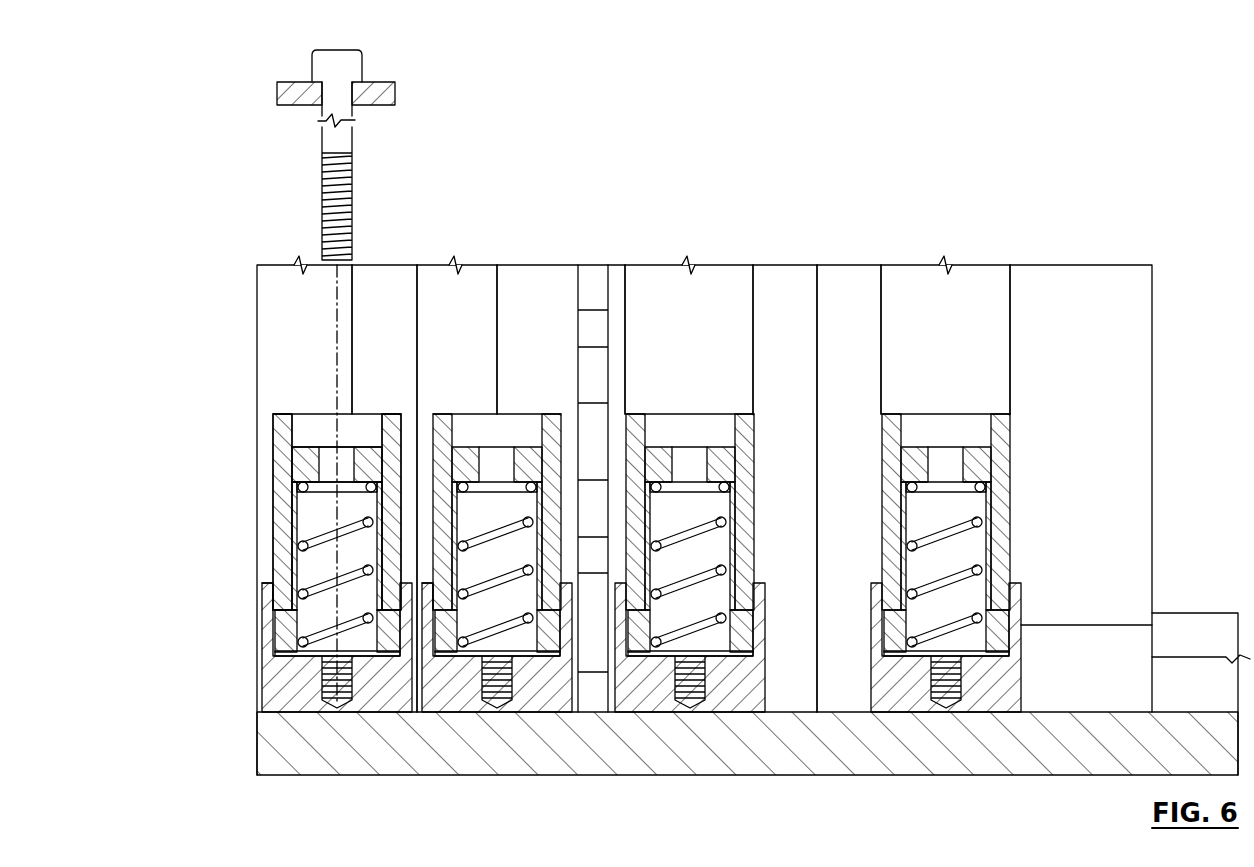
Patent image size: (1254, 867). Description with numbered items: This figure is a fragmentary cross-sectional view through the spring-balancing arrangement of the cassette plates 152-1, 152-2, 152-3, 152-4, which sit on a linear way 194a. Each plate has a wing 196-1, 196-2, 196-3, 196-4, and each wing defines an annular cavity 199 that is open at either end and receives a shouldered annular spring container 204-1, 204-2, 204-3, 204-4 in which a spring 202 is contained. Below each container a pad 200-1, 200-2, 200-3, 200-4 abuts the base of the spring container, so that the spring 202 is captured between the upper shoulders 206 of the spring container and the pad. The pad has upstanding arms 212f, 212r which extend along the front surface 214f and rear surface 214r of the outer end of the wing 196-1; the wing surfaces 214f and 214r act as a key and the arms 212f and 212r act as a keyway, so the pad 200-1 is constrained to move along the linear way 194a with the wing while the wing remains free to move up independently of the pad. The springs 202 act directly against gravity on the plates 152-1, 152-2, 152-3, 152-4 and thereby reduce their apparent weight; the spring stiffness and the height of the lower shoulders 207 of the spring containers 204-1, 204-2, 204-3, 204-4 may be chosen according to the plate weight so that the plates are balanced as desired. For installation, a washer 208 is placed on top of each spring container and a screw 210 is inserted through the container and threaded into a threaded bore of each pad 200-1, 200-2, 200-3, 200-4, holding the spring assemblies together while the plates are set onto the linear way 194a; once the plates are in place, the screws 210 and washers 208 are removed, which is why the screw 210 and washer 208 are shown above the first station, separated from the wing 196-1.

The cassette plate 152-1 is at (322, 305).
The cassette plate 152-2 is at (566, 305).
The cassette plate 152-3 is at (709, 305).
The cassette plate 152-4 is at (974, 305).
The linear way 194a is at (258, 742).
The wing 196-1 is at (273, 430).
The wing 196-2 is at (562, 433).
The wing 196-3 is at (755, 433).
The wing 196-4 is at (1011, 433).
The annular cavity 199 is at (306, 516).
The pad 200-1 is at (262, 688).
The pad 200-2 is at (457, 695).
The pad 200-3 is at (765, 675).
The pad 200-4 is at (1022, 657).
The spring 202 is at (718, 512).
The spring container 204-1 is at (368, 442).
The spring container 204-2 is at (552, 642).
The spring container 204-3 is at (640, 642).
The spring container 204-4 is at (912, 447).
The upper shoulders 206 is at (292, 467).
The lower shoulders 207 is at (274, 630).
The washer 208 is at (297, 81).
The screw 210 is at (302, 42).
The front upstanding arm 212f is at (433, 625).
The rear upstanding arm 212r is at (258, 598).
The front surface 214f is at (402, 440).
The rear surface 214r is at (273, 498).